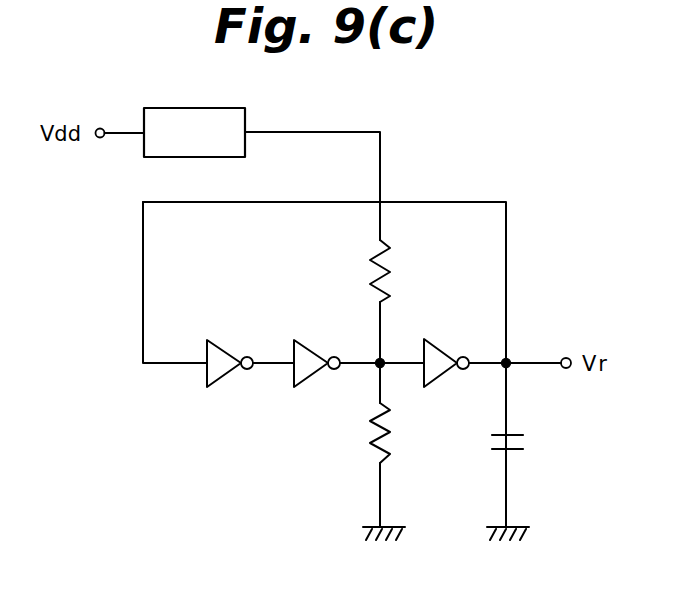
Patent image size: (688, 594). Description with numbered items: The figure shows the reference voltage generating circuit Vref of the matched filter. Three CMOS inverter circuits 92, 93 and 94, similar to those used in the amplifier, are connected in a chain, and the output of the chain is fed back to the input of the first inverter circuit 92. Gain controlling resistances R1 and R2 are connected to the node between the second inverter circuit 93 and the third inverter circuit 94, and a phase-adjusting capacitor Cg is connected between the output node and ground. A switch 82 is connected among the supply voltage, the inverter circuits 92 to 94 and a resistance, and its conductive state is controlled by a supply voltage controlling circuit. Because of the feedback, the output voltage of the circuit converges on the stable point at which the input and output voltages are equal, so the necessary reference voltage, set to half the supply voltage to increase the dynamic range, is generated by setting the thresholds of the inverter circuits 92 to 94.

The switch 82 is at (153, 106).
The CMOS inverter circuit 92 is at (230, 340).
The CMOS inverter circuit 93 is at (320, 340).
The CMOS inverter circuit 94 is at (449, 340).
The gain controlling resistance R1 is at (361, 271).
The gain controlling resistance R2 is at (361, 433).
The phase-adjusting capacitor Cg is at (528, 445).
The reference voltage generating circuit Vref is at (613, 177).